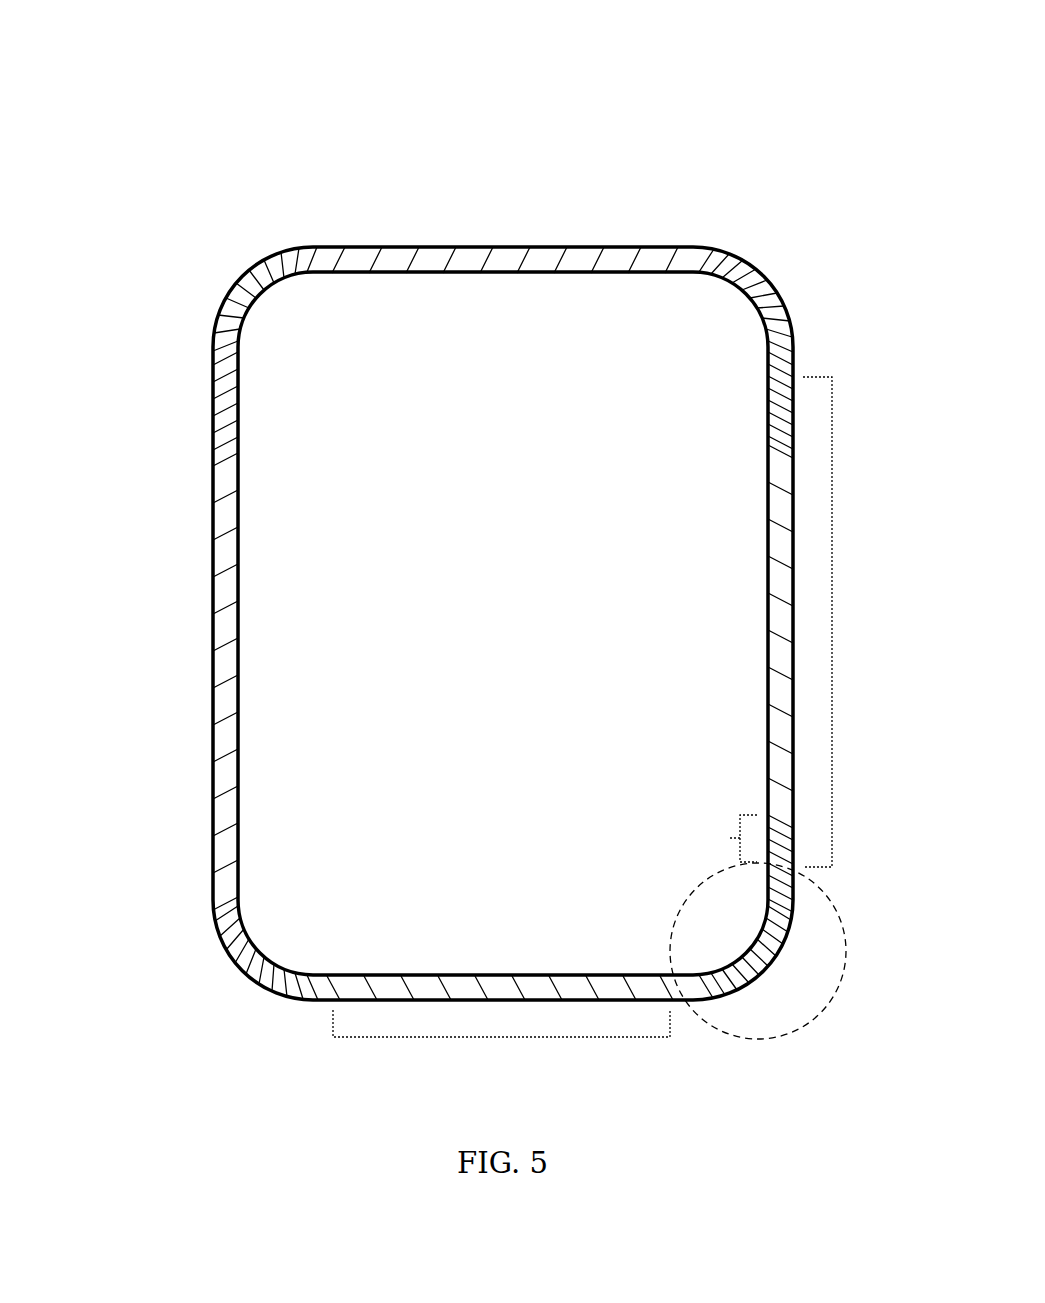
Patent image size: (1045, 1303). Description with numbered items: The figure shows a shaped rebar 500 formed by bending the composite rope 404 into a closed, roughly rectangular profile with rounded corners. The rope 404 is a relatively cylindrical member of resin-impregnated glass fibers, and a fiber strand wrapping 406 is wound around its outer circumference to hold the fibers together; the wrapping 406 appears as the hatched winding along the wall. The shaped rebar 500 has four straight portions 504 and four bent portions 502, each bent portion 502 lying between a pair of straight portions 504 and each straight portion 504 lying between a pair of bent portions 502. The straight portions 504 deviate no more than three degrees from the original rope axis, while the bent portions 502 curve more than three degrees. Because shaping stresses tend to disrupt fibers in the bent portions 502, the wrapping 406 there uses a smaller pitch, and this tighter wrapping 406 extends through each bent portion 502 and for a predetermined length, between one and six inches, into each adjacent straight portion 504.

The shaped rebar 500 is at (88, 128).
The rope 404 is at (779, 301).
The wrapping 406 is at (223, 432).
The straight portion 504 is at (832, 622).
The bent portion 502 is at (813, 1017).